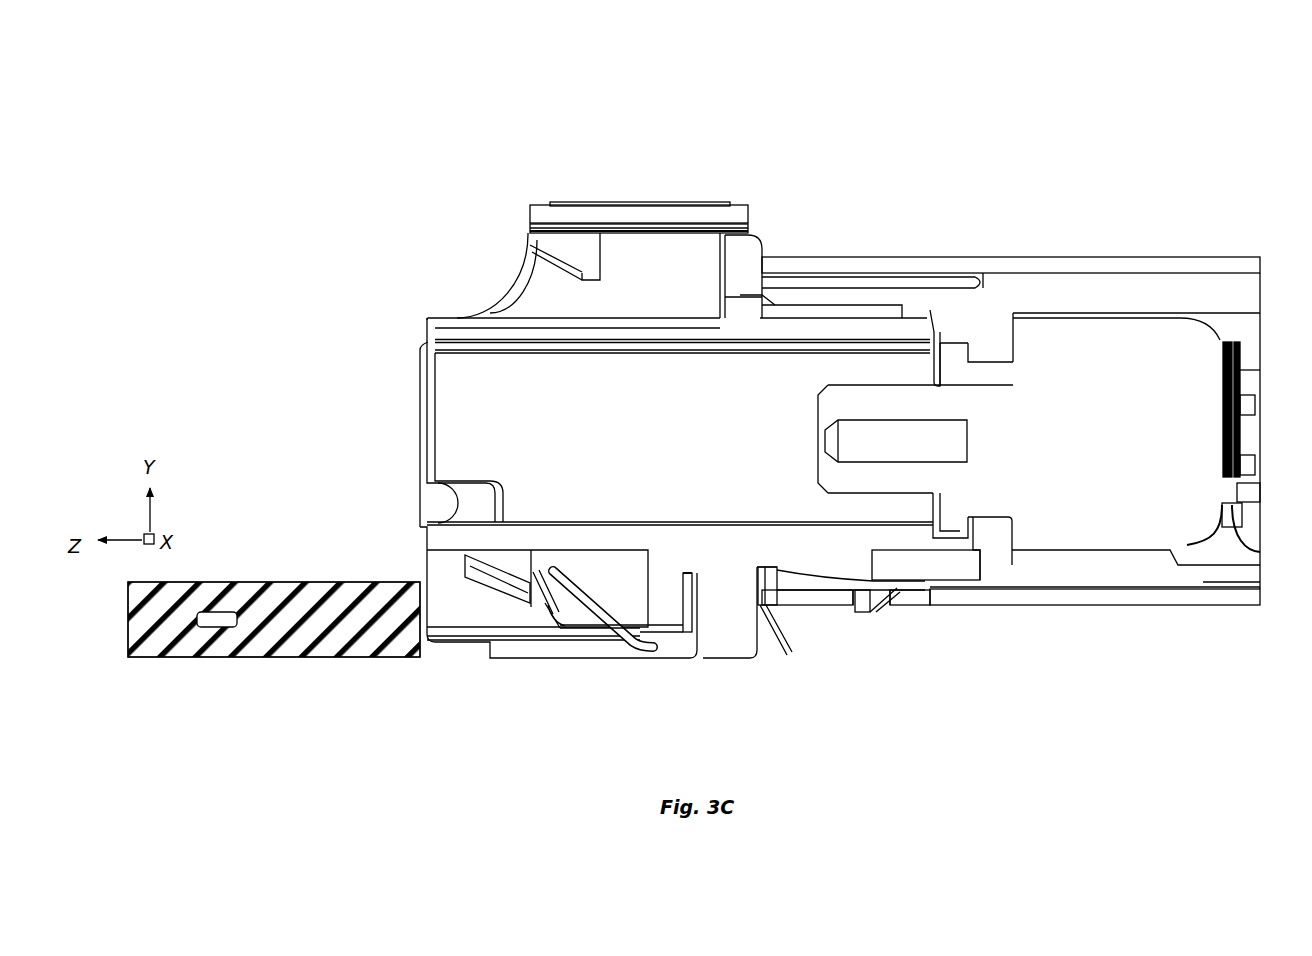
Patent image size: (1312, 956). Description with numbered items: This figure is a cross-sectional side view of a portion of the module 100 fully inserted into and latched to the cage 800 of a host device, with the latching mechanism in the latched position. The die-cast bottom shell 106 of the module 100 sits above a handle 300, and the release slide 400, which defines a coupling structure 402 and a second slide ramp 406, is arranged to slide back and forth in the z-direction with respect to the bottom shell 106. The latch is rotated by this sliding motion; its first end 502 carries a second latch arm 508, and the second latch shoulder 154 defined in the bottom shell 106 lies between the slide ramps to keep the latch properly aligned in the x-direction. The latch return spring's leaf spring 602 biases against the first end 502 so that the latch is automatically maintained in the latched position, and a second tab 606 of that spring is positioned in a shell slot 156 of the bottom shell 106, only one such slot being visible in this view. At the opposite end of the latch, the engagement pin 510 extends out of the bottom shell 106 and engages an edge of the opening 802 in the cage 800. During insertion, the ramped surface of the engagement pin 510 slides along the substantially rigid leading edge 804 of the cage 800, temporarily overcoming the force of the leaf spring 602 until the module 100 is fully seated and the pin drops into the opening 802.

The module 100 is at (1112, 86).
The release slide 400 is at (545, 205).
The cage 800 is at (1105, 258).
The opening 802 is at (907, 606).
The coupling structure 402 is at (221, 612).
The first end 502 is at (462, 564).
The handle 300 is at (272, 621).
The second latch arm 508 is at (470, 612).
The leaf spring 602 is at (522, 616).
The second latch shoulder 154 is at (552, 615).
The second slide ramp 406 is at (583, 602).
The second tab 606 is at (688, 630).
The shell slot 156 is at (693, 562).
The bottom shell 106 is at (747, 652).
The leading edge 804 is at (798, 607).
The engagement pin 510 is at (868, 616).